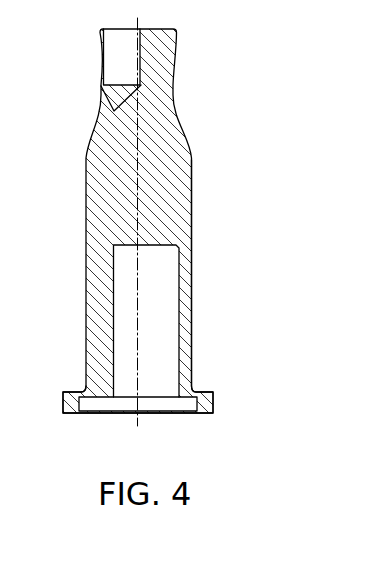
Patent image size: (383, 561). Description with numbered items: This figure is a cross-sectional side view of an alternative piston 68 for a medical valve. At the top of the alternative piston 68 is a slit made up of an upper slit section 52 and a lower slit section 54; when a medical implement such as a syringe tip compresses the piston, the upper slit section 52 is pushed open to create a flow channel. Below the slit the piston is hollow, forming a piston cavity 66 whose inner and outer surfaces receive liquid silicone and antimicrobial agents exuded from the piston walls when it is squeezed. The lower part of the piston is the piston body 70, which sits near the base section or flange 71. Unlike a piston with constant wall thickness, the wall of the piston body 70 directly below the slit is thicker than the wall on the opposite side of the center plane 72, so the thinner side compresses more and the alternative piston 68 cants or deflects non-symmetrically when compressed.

The upper slit section 52 is at (102, 60).
The lower slit section 54 is at (123, 101).
The piston cavity 66 is at (117, 312).
The alternative piston 68 is at (195, 120).
The piston body 70 is at (192, 277).
The flange 71 is at (200, 390).
The center plane 72 is at (138, 380).